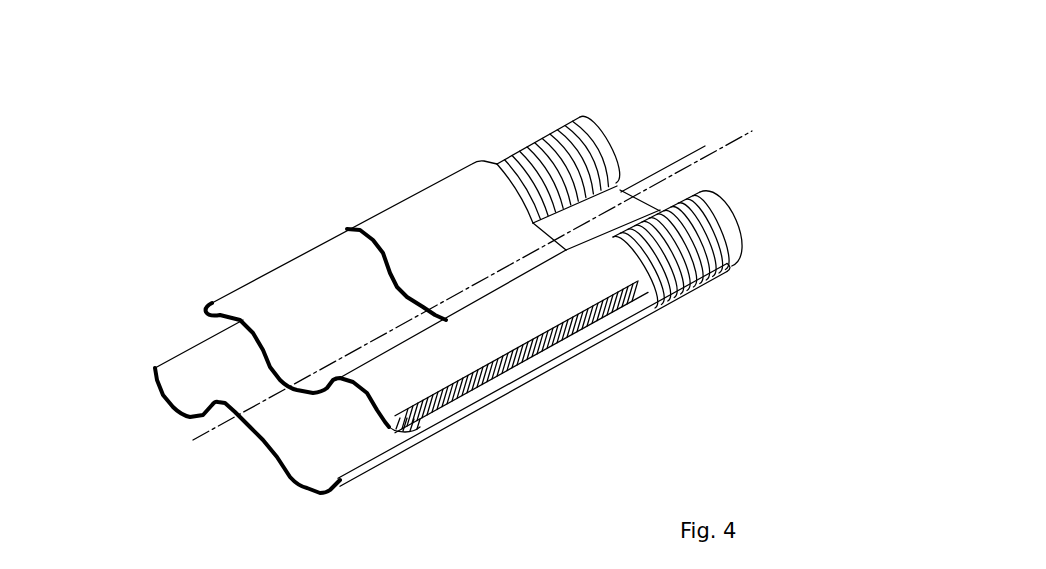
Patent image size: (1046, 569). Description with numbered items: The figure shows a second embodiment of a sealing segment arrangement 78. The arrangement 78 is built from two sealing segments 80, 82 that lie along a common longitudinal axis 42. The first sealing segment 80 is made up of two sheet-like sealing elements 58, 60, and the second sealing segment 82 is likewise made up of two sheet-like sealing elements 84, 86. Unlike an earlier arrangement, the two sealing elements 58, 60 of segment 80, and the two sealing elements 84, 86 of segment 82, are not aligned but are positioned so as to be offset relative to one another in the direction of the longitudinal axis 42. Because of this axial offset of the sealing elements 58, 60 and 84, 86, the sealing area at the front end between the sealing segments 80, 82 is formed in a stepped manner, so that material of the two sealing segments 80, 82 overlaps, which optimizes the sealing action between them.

The sealing segment arrangement 78 is at (50, 65).
The sheet-like sealing element 58 is at (247, 428).
The sheet-like sealing element 60 is at (300, 304).
The sealing segment 80 is at (303, 243).
The sealing segment 82 is at (414, 190).
The sheet-like sealing element 84 is at (494, 210).
The sheet-like sealing element 86 is at (622, 189).
The longitudinal axis 42 is at (704, 158).